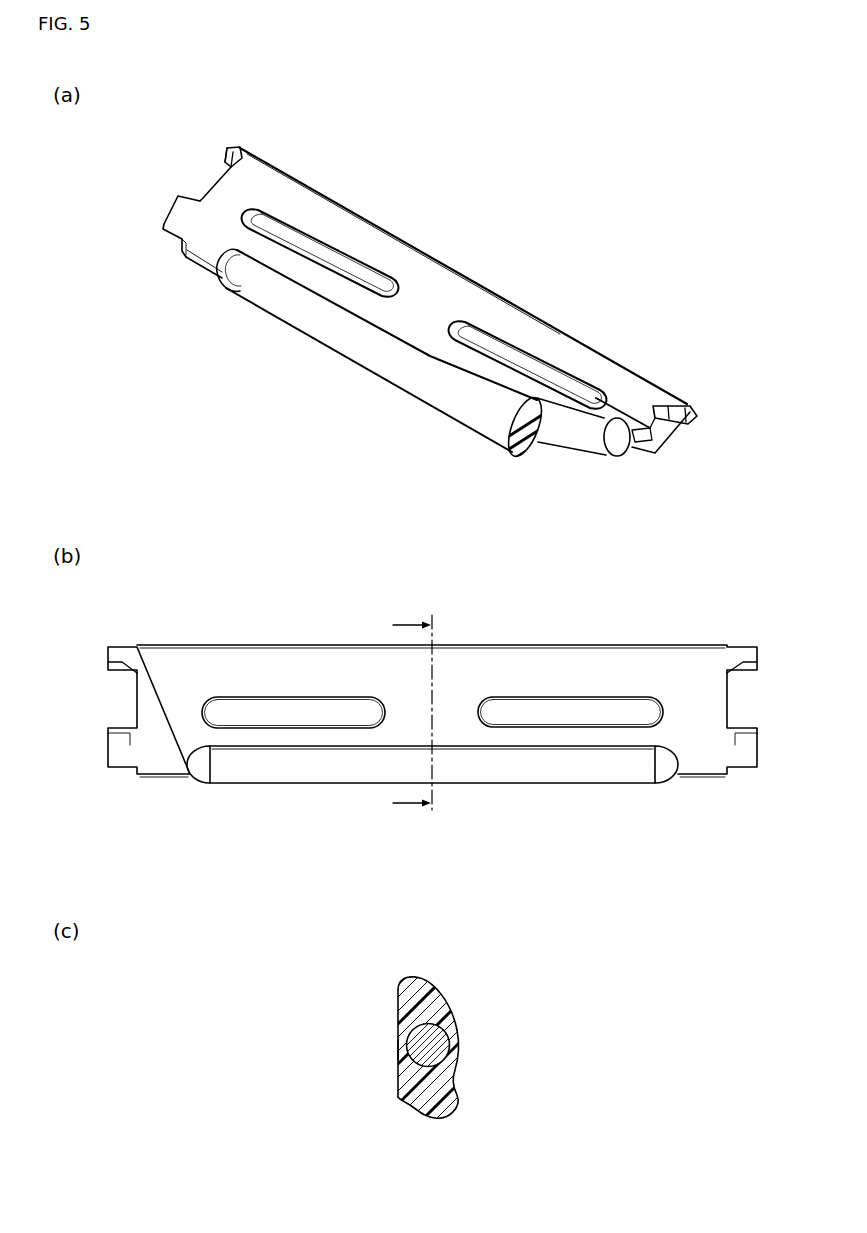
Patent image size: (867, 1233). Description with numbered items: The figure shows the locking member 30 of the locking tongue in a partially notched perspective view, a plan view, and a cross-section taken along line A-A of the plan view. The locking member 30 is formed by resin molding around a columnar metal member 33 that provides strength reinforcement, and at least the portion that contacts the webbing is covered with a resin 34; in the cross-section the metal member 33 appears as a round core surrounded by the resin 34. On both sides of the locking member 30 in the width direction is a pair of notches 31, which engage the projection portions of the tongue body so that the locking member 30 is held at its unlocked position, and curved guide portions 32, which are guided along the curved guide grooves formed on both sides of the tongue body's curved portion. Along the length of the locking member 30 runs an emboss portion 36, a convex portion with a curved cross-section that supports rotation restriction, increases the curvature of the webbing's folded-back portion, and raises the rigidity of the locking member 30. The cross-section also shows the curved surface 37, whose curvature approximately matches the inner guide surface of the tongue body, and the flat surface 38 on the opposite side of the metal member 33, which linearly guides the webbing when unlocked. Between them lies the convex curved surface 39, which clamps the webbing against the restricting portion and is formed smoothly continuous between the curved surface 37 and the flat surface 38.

The locking member 30 is at (457, 237).
The notch 31 is at (240, 147).
The guide portion 32 is at (178, 215).
The metal member 33 is at (617, 448).
The resin 34 is at (543, 335).
The emboss portion 36 is at (370, 362).
The curved surface 37 is at (459, 1022).
The flat surface 38 is at (398, 1038).
The convex curved surface 39 is at (410, 977).